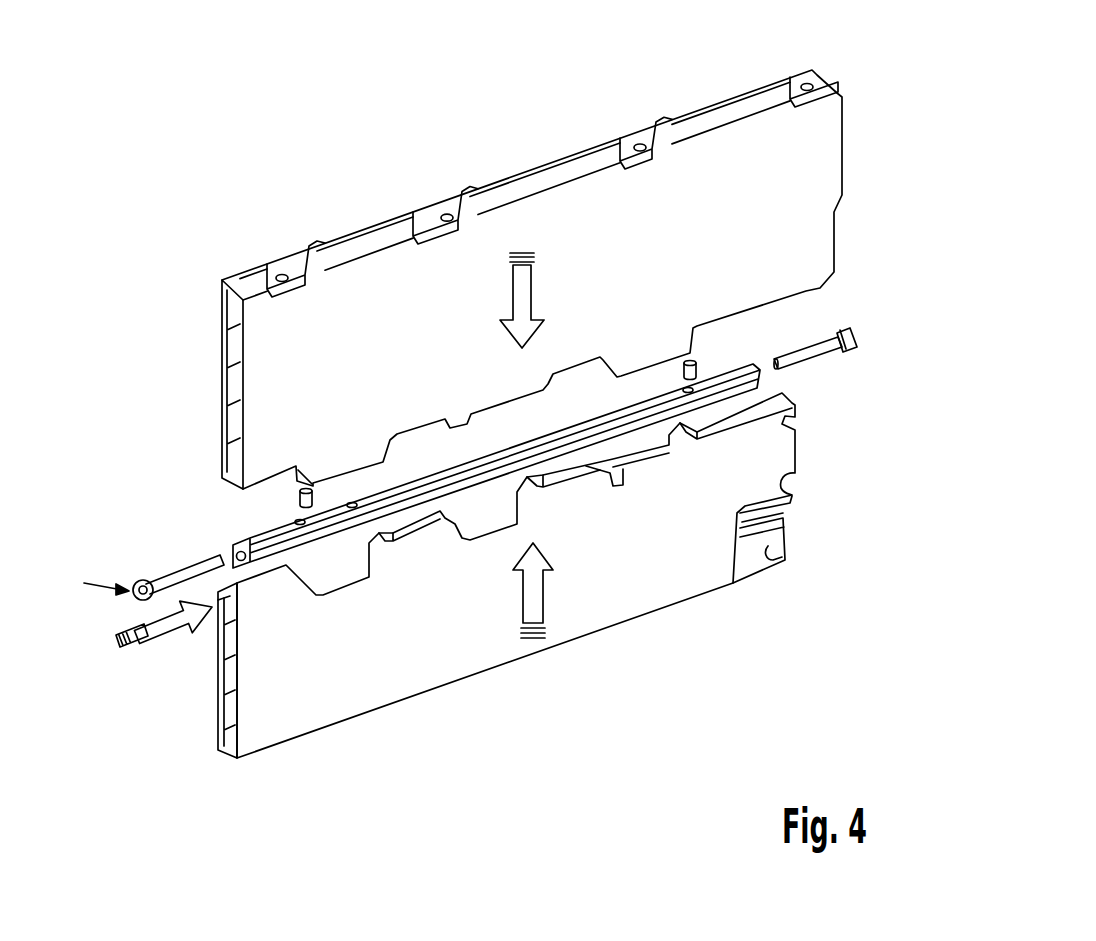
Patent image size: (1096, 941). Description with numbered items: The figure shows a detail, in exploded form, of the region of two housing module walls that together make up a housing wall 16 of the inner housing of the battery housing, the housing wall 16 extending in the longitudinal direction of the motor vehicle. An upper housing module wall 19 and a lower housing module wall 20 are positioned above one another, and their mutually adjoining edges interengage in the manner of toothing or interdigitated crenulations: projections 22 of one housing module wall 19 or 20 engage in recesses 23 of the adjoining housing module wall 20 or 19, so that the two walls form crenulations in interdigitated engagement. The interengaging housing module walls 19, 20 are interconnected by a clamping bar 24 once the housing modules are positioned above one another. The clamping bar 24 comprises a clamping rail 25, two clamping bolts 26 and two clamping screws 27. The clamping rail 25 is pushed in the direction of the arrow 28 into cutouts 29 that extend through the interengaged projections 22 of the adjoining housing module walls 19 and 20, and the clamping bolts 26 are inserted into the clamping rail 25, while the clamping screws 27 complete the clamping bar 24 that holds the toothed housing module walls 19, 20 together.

The housing wall 16 is at (467, 116).
The housing module wall 19 is at (797, 173).
The housing module wall 20 is at (333, 707).
The projection 22 is at (322, 464).
The recess 23 is at (803, 294).
The clamping bar 24 is at (87, 579).
The clamping rail 25 is at (613, 428).
The clamping bolt 26 is at (697, 360).
The clamping screw 27 is at (823, 353).
The arrow 28 is at (147, 633).
The cutout 29 is at (298, 477).